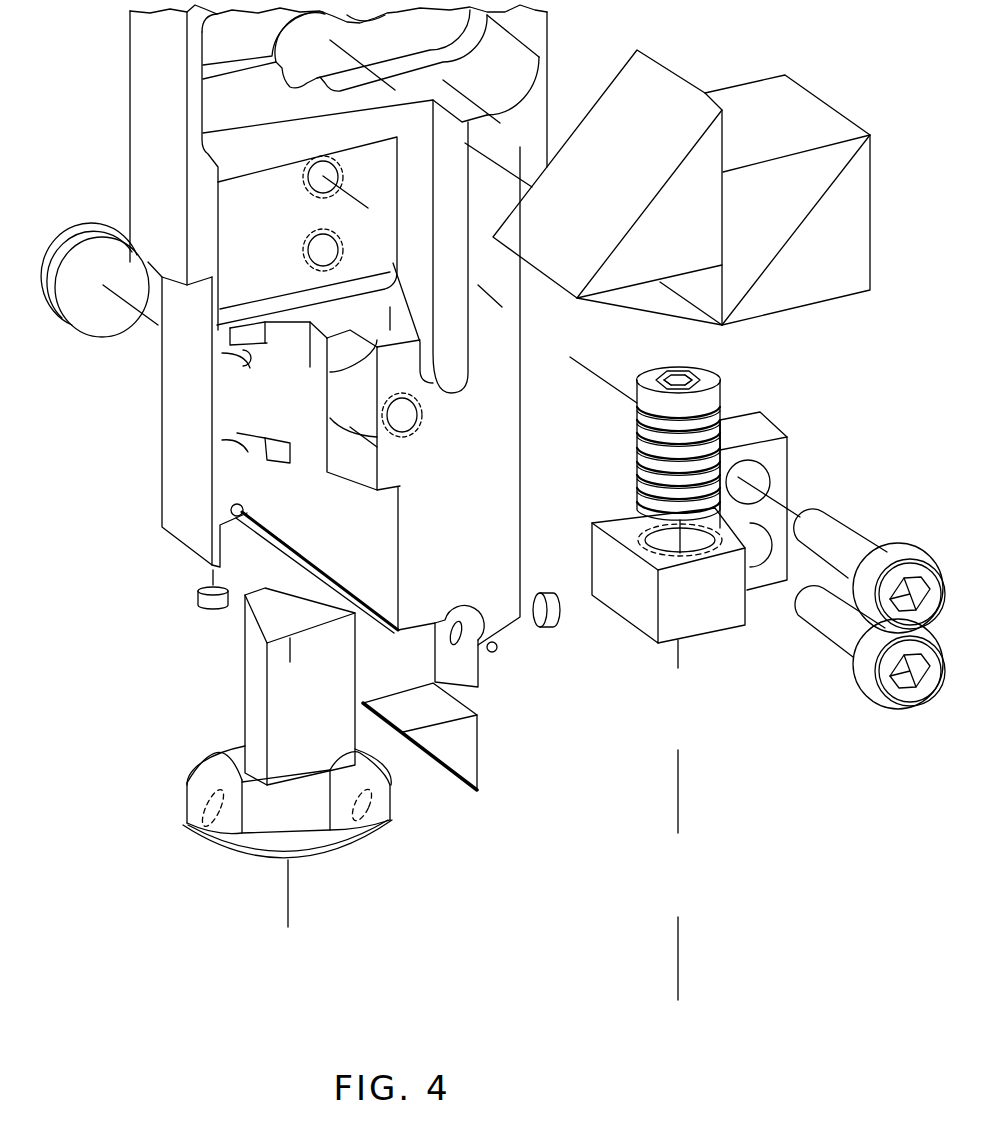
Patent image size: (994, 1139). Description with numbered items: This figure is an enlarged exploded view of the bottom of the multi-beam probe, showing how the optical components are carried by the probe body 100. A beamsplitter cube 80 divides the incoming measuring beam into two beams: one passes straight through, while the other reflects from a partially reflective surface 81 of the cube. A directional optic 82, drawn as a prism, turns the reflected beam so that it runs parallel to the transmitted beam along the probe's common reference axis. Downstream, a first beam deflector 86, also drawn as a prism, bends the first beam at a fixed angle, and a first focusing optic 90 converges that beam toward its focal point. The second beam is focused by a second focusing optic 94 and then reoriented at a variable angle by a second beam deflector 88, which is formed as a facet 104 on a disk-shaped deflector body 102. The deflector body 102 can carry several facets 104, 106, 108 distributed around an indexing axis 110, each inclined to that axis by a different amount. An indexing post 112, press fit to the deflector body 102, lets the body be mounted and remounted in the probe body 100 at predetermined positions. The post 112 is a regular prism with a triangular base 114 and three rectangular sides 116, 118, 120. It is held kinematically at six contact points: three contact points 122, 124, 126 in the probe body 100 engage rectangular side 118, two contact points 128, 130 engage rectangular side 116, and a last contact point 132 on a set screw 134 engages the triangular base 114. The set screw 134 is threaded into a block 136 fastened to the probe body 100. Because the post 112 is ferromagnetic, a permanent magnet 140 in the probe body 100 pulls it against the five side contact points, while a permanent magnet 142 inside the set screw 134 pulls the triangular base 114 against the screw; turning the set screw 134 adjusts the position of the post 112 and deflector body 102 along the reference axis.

The probe body 100 is at (147, 95).
The permanent magnet 140 is at (90, 230).
The contact point 122 is at (267, 341).
The contact point 128 is at (227, 389).
The contact point 124 is at (320, 413).
The contact point 130 is at (253, 460).
The contact point 126 is at (268, 457).
The second focusing optic 94 is at (197, 598).
The rectangular side 118 is at (313, 600).
The triangular base 114 is at (273, 620).
The rectangular side 116 is at (245, 672).
The indexing post 112 is at (240, 712).
The rectangular side 120 is at (292, 719).
The facet 108 is at (243, 733).
The facet 104 is at (200, 802).
The facet 106 is at (378, 802).
The second beam deflector 88 is at (203, 846).
The deflector body 102 is at (317, 842).
The indexing axis 110 is at (290, 920).
The first beam deflector 86 is at (489, 750).
The first focusing optic 90 is at (552, 630).
The directional optic 82 is at (623, 270).
The beamsplitter cube 80 is at (822, 287).
The partially reflective surface 81 is at (787, 237).
The set screw 134 is at (640, 463).
The permanent magnet 142 is at (680, 387).
The contact point 132 is at (607, 520).
The block 136 is at (722, 617).